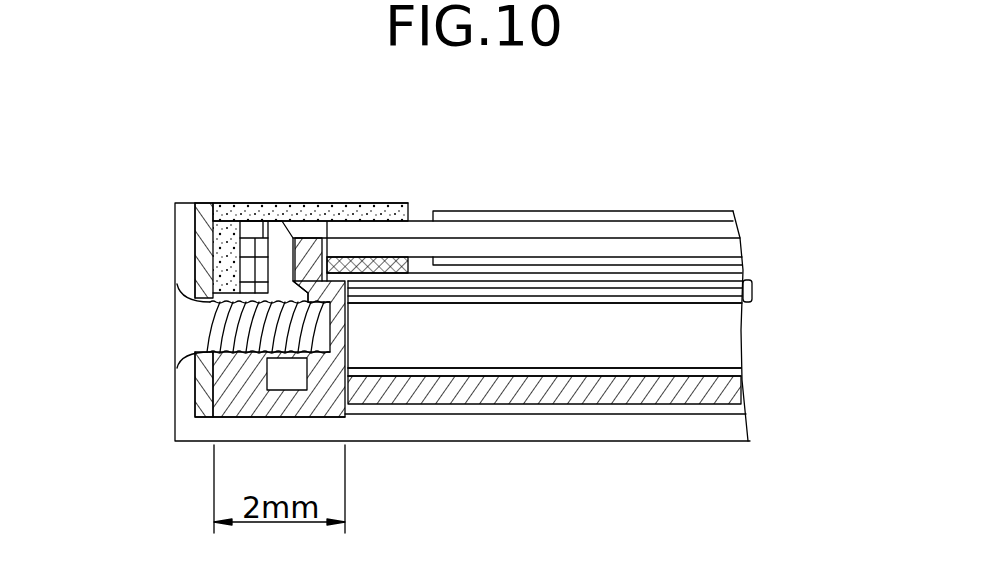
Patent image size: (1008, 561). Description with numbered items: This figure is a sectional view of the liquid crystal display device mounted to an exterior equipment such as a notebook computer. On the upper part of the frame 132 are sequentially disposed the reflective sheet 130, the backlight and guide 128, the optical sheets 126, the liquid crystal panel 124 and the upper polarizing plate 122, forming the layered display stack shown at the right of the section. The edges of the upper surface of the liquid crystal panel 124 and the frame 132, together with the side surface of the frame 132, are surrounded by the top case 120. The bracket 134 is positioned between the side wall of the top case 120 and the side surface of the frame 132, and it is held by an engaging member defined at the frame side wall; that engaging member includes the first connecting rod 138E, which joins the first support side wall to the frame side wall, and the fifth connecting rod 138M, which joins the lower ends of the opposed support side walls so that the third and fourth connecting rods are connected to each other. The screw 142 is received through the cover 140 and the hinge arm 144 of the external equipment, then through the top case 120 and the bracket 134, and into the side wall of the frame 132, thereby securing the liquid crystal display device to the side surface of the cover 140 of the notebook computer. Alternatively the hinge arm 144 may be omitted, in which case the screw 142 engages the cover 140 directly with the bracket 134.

The top case 120 is at (371, 211).
The upper polarizing plate 122 is at (725, 213).
The liquid crystal panel 124 is at (737, 232).
The optical sheets 126 is at (753, 292).
The backlight and guide 128 is at (730, 328).
The reflective sheet 130 is at (730, 370).
The frame 132 is at (743, 395).
The bracket 134 is at (290, 222).
The first connecting rod 138E is at (255, 257).
The fifth connecting rod 138M is at (215, 410).
The cover 140 is at (183, 394).
The screw 142 is at (183, 330).
The hinge arm 144 is at (213, 243).